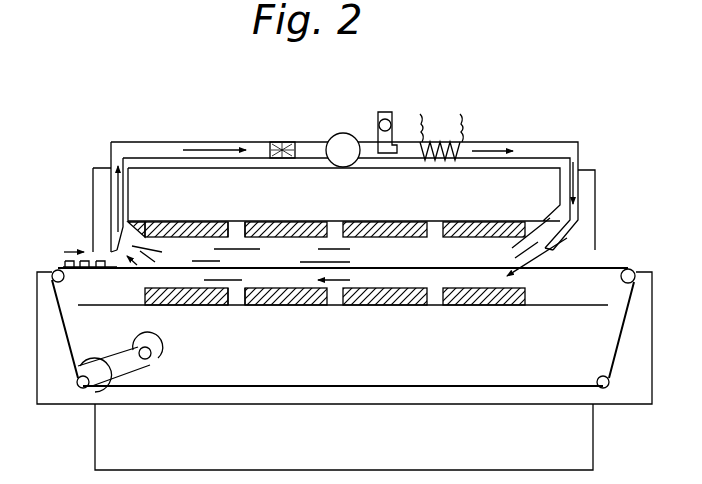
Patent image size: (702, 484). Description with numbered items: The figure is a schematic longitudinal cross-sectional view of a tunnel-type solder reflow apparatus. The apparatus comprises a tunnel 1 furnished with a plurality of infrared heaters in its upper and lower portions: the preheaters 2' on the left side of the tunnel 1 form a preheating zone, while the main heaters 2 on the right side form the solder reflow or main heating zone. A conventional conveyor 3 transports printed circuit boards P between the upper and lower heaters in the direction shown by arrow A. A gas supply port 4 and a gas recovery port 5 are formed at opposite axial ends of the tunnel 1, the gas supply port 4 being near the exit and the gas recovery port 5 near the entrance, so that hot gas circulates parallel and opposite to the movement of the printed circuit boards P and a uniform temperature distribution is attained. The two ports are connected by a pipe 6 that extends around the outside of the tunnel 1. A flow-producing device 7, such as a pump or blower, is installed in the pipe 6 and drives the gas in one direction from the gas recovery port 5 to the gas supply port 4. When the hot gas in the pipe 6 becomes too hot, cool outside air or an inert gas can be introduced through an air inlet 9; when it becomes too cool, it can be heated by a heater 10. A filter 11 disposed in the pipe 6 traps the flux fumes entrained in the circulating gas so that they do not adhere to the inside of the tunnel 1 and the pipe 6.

The tunnel 1 is at (347, 224).
The main heaters 2 is at (343, 267).
The preheaters 2' is at (238, 269).
The conveyor 3 is at (612, 259).
The gas supply port 4 is at (560, 234).
The gas recovery port 5 is at (135, 221).
The pipe 6 is at (160, 145).
The flow-producing device 7 is at (343, 133).
The air inlet 9 is at (392, 112).
The heater 10 is at (438, 161).
The filter 11 is at (285, 142).
The printed circuit boards P is at (65, 263).
The direction of movement A is at (74, 239).